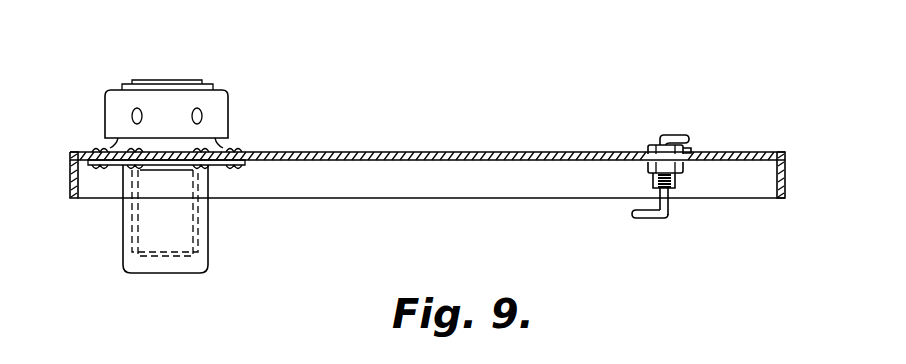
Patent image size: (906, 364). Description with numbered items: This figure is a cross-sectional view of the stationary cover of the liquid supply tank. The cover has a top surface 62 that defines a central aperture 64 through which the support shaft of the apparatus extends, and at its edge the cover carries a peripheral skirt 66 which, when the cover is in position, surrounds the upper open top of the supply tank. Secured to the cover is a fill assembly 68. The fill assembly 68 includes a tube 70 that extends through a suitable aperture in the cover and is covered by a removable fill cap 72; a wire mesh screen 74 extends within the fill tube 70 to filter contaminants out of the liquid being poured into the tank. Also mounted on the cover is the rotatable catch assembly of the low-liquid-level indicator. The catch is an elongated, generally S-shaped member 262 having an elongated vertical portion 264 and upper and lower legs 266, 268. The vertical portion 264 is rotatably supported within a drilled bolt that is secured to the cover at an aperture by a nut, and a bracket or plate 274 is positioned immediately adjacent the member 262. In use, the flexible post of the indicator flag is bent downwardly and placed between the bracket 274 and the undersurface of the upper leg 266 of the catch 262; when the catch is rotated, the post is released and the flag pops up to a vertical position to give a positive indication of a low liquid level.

The top surface 62 is at (520, 152).
The central aperture 64 is at (440, 152).
The peripheral skirt 66 is at (786, 178).
The fill assembly 68 is at (237, 139).
The tube 70 is at (208, 229).
The removable fill cap 72 is at (118, 88).
The wire mesh screen 74 is at (132, 200).
The S-shaped member 262 is at (658, 139).
The elongated vertical portion 264 is at (669, 193).
The upper leg 266 is at (672, 137).
The lower leg 268 is at (640, 219).
The bracket 274 is at (692, 150).